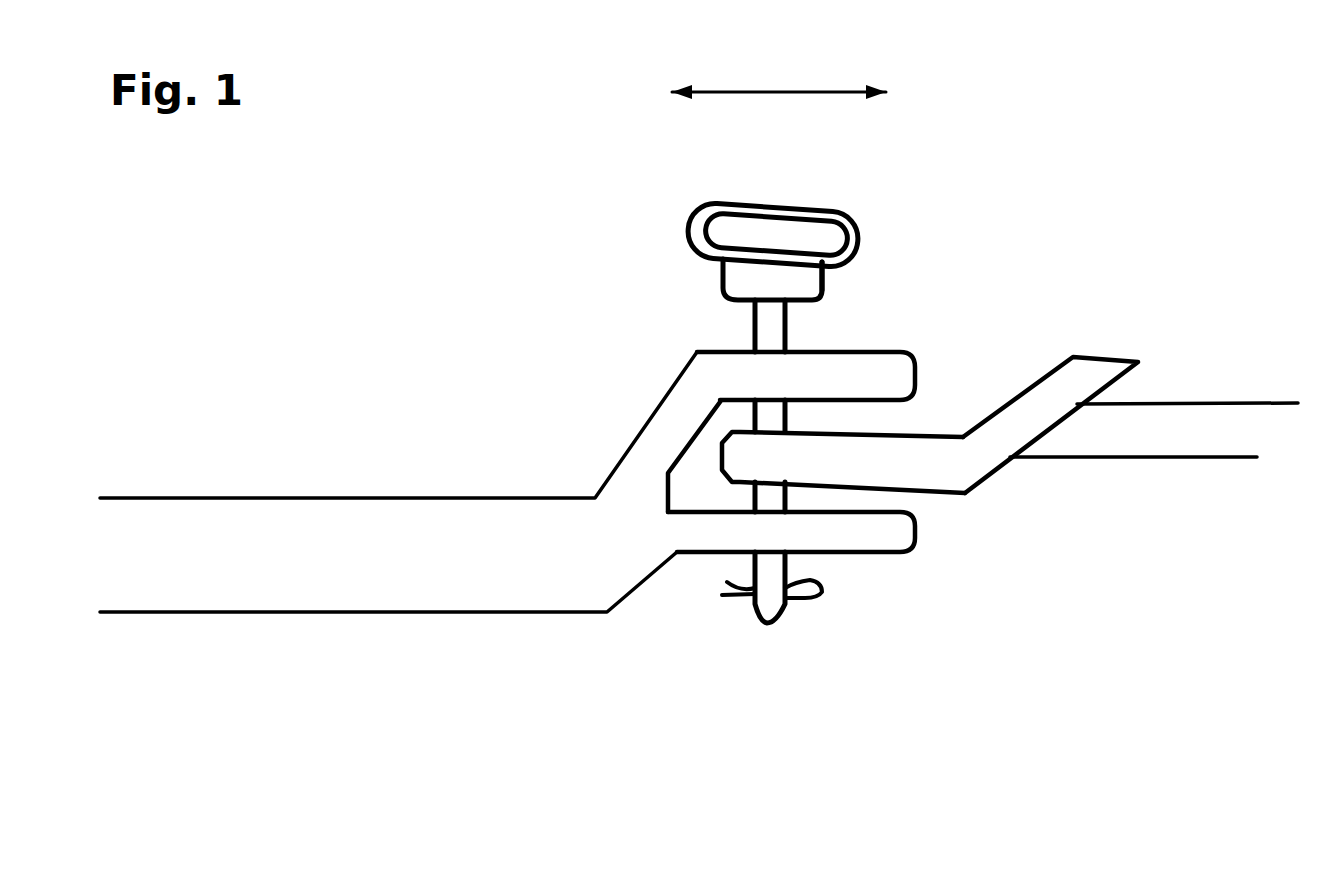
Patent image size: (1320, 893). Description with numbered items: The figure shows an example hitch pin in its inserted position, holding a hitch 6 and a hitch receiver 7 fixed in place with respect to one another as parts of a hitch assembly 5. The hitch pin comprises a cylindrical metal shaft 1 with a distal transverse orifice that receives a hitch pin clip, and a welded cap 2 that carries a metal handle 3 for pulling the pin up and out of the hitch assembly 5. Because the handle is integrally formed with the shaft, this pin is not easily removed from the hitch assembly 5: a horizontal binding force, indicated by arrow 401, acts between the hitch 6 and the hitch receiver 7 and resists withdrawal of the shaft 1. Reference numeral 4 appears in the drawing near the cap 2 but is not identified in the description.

The arrow 401 is at (779, 76).
The cylindrical metal shaft 1 is at (772, 342).
The welded cap 2 is at (753, 280).
The metal handle 3 is at (730, 213).
The shoulder of key body 4 is at (840, 292).
The hitch assembly 5 is at (1008, 672).
The hitch 6 is at (937, 457).
The hitch receiver 7 is at (630, 518).